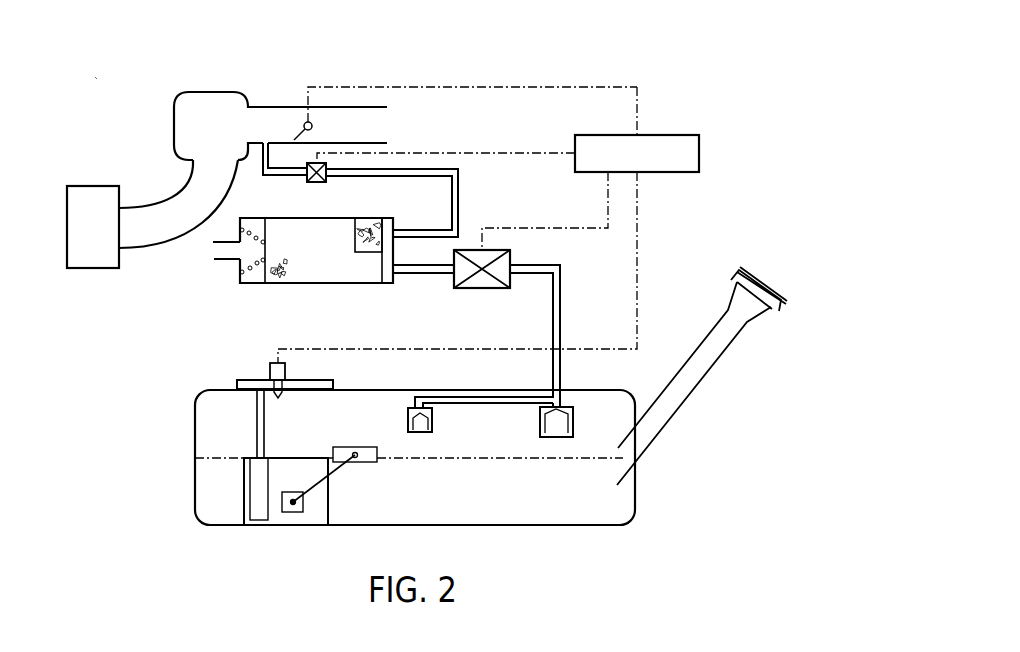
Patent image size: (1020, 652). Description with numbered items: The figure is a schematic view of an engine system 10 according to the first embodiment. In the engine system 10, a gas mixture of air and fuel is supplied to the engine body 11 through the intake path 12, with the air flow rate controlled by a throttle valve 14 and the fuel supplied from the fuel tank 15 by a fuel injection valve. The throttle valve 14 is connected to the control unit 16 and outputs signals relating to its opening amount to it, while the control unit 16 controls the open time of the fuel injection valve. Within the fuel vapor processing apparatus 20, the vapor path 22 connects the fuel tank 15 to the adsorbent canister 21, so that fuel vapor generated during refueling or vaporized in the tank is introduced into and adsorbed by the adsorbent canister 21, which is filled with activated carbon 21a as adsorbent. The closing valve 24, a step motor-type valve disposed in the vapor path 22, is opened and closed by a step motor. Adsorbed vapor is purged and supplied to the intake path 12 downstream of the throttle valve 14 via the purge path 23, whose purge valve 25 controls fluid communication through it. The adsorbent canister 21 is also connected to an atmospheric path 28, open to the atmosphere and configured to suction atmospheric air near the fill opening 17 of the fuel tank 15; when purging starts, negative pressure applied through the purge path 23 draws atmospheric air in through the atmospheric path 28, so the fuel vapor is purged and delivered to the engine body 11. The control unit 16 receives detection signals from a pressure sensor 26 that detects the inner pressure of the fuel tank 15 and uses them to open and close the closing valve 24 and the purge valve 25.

The engine system 10 is at (96, 78).
The engine body 11 is at (92, 195).
The intake path 12 is at (263, 106).
The throttle valve 14 is at (311, 123).
The fuel tank 15 is at (193, 430).
The control unit 16 is at (685, 134).
The fill opening 17 is at (780, 313).
The fuel vapor processing apparatus 20 is at (495, 72).
The adsorbent canister 21 is at (316, 289).
The activated carbon 21a is at (377, 223).
The vapor path 22 is at (564, 301).
The purge path 23 is at (459, 188).
The closing valve 24 is at (478, 290).
The purge valve 25 is at (307, 183).
The pressure sensor 26 is at (268, 372).
The atmospheric path 28 is at (227, 261).